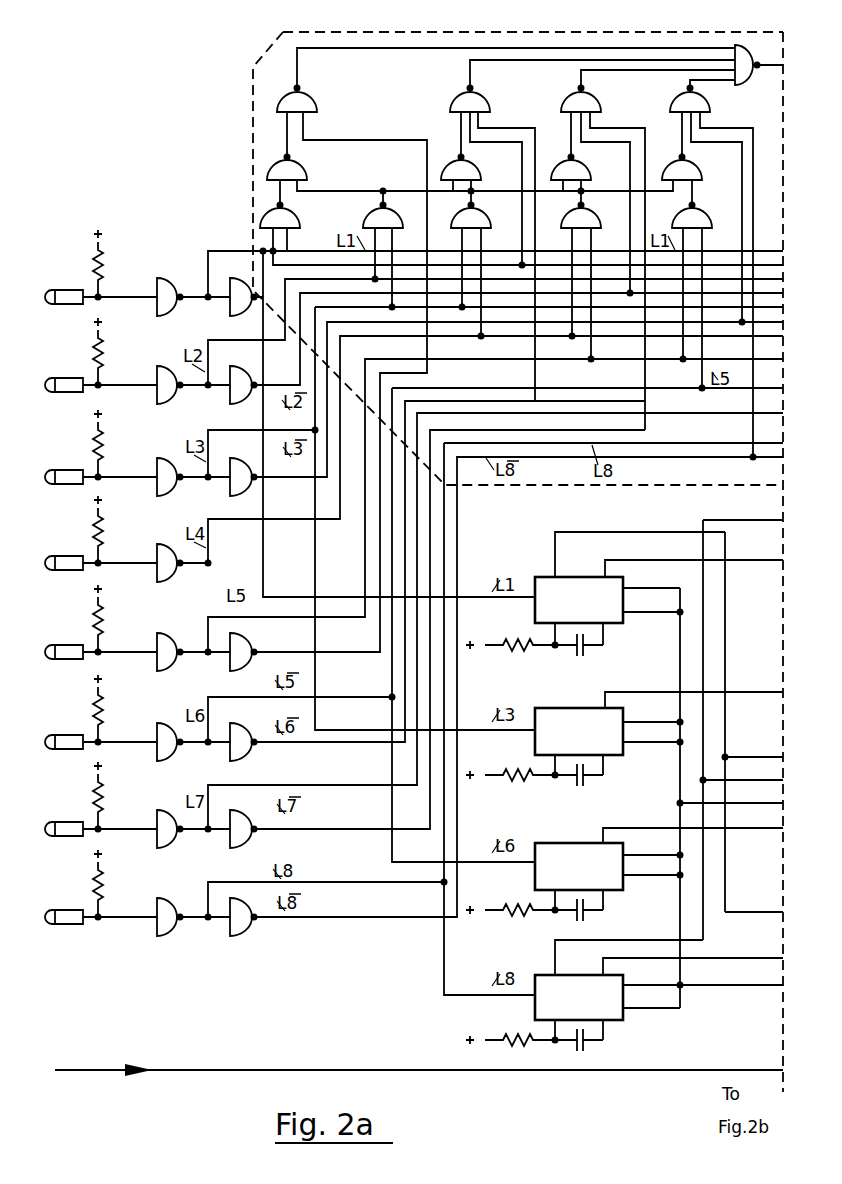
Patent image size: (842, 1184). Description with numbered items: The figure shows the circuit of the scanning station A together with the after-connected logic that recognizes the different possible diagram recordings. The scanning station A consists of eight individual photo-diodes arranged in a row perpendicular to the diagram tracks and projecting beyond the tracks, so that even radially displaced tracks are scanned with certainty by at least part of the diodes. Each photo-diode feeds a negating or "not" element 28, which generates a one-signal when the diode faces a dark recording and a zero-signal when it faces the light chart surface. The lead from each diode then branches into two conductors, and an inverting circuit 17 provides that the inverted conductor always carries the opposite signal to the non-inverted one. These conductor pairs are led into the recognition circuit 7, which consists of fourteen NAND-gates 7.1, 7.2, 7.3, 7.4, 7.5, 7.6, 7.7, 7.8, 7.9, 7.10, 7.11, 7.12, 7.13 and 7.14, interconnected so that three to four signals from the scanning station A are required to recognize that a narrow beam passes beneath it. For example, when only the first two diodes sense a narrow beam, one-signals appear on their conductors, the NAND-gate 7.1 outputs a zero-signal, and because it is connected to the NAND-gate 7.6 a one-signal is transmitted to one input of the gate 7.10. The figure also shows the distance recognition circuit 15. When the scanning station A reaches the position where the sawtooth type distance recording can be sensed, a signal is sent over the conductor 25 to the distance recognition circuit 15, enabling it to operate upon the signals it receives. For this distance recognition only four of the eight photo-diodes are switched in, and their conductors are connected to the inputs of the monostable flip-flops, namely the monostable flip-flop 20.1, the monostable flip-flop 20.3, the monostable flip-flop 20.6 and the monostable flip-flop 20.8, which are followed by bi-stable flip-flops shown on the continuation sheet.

The scanning station A is at (62, 243).
The recognition circuit 7 is at (210, 180).
The distance recognition circuit 15 is at (775, 648).
The inverting circuit 17 is at (240, 928).
The conductor 25 is at (612, 1072).
The negating element 28 is at (172, 906).
The NAND-gate 7.1 is at (290, 226).
The NAND-gate 7.2 is at (392, 224).
The NAND-gate 7.3 is at (480, 226).
The NAND-gate 7.4 is at (592, 226).
The NAND-gate 7.5 is at (704, 226).
The NAND-gate 7.6 is at (306, 170).
The NAND-gate 7.7 is at (480, 170).
The NAND-gate 7.8 is at (588, 170).
The NAND-gate 7.9 is at (700, 170).
The NAND-gate 7.10 is at (308, 102).
The NAND-gate 7.11 is at (480, 102).
The NAND-gate 7.12 is at (592, 102).
The NAND-gate 7.13 is at (702, 105).
The NAND-gate 7.14 is at (745, 46).
The monostable flip-flop 20.1 is at (544, 616).
The monostable flip-flop 20.3 is at (544, 747).
The monostable flip-flop 20.6 is at (544, 882).
The monostable flip-flop 20.8 is at (544, 1013).